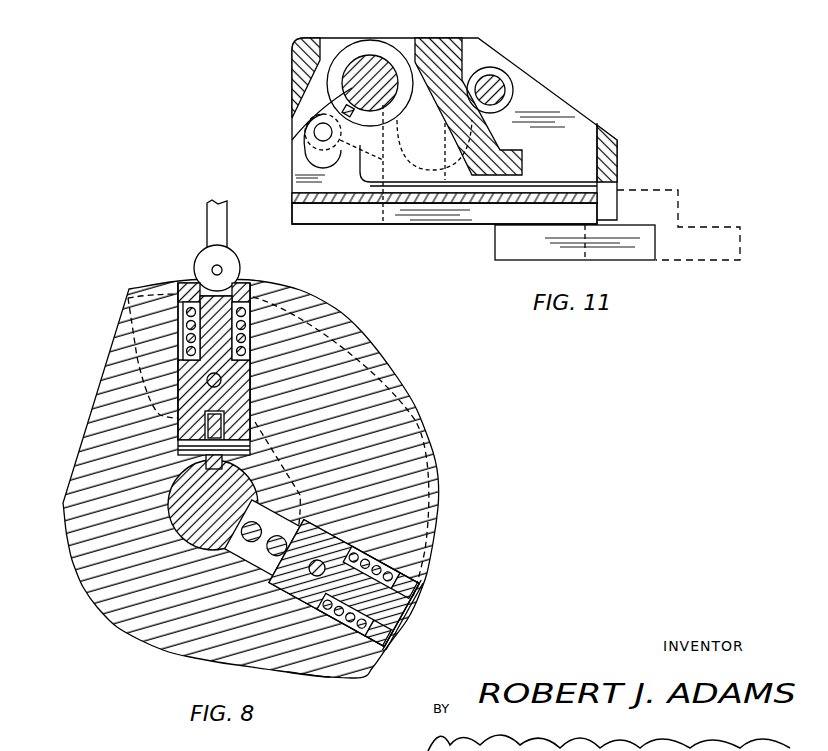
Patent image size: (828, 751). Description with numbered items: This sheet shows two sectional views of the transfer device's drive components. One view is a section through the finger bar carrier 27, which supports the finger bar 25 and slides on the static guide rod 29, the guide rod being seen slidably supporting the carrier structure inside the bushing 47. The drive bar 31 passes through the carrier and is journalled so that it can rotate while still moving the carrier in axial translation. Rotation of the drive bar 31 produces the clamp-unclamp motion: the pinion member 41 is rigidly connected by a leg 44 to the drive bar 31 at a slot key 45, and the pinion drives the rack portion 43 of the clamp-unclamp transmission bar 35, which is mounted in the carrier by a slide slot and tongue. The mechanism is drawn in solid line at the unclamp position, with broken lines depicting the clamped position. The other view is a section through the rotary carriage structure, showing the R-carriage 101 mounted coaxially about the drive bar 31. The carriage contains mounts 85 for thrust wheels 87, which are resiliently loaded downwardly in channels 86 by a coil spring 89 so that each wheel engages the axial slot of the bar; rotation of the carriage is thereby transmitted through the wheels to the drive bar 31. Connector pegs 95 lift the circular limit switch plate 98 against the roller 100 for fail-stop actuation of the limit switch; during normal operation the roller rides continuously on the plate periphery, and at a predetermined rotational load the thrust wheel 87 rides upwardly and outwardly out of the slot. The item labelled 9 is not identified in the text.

In FIG. 11, the finger bar 25 is at (497, 240).
In FIG. 11, the finger bar carrier 27 is at (427, 38).
In FIG. 11, the guide rod 29 is at (500, 75).
In FIG. 11, the drive bar 31 is at (372, 68).
In FIG. 8, the drive bar 31 is at (205, 490).
In FIG. 11, the clamp-unclamp transmission bar 35 is at (330, 212).
In FIG. 11, the pinion member 41 is at (314, 130).
In FIG. 11, the rack portion 43 is at (305, 165).
In FIG. 11, the leg 44 is at (305, 143).
In FIG. 11, the slot key 45 is at (344, 110).
In FIG. 11, the bushing 47 is at (512, 97).
In FIG. 8, the mount 85 is at (250, 382).
In FIG. 8, the channel 86 is at (250, 410).
In FIG. 8, the thrust wheel 87 is at (308, 500).
In FIG. 8, the coil spring 89 is at (252, 322).
In FIG. 8, the retaining plate 9 is at (237, 476).
In FIG. 8, the connector peg 95 is at (292, 597).
In FIG. 8, the circular limit switch plate 98 is at (432, 448).
In FIG. 8, the roller 100 is at (197, 262).
In FIG. 8, the R-carriage 101 is at (310, 672).